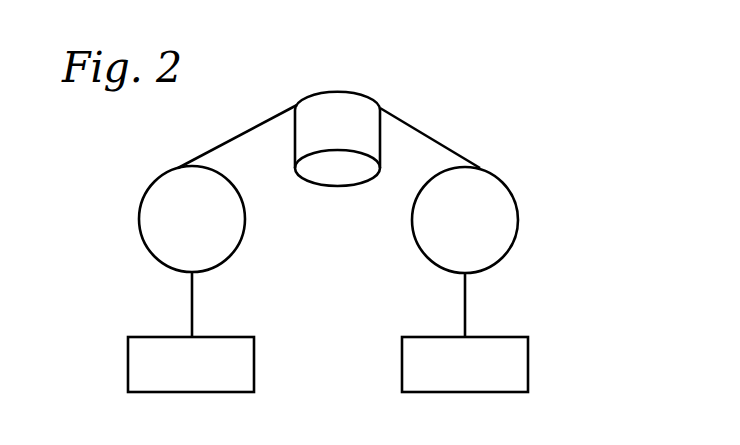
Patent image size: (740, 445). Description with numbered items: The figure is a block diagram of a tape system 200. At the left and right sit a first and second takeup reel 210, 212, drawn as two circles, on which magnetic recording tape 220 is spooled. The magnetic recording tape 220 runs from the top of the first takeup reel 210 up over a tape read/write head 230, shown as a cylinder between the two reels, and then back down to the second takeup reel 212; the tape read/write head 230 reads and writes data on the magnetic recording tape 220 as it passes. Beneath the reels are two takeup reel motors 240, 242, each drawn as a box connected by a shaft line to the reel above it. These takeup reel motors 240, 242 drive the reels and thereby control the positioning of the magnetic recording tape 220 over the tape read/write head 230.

The tape system 200 is at (548, 67).
The first takeup reel 210 is at (138, 220).
The second takeup reel 212 is at (518, 220).
The magnetic recording tape 220 is at (437, 140).
The tape read/write head 230 is at (334, 178).
The takeup reel motor 240 is at (128, 350).
The takeup reel motor 242 is at (528, 350).